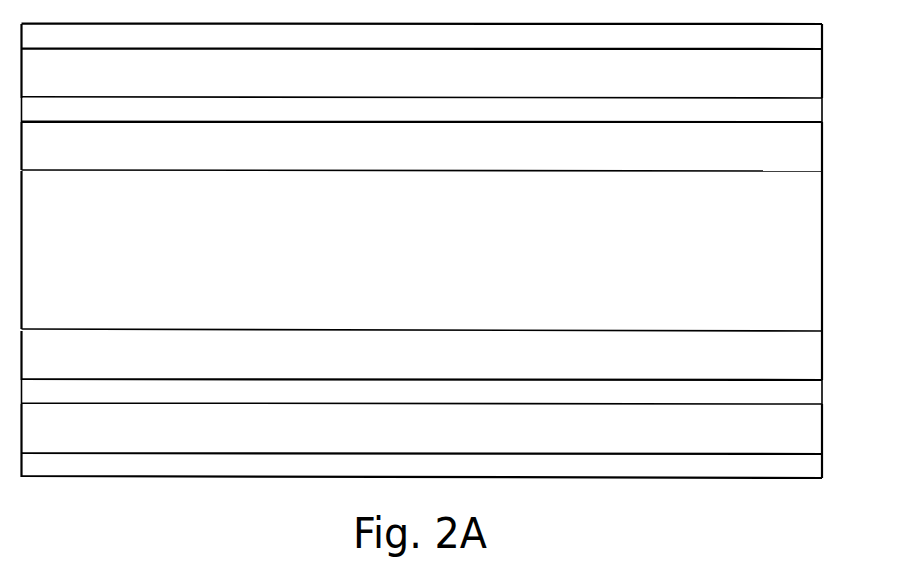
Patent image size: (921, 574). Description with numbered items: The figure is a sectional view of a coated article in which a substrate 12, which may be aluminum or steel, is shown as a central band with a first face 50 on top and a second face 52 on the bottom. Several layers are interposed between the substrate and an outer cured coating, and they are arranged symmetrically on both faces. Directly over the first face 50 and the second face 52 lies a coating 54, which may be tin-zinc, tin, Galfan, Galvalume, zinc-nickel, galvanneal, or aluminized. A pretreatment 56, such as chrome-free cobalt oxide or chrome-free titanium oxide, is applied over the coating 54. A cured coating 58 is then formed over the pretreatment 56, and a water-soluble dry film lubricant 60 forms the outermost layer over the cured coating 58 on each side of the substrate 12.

The substrate 12 is at (810, 250).
The first face 50 is at (788, 171).
The second face 52 is at (805, 331).
The coating 54 is at (807, 145).
The pretreatment 56 is at (810, 107).
The cured coating 58 is at (812, 73).
The water-soluble dry film lubricant 60 is at (807, 36).